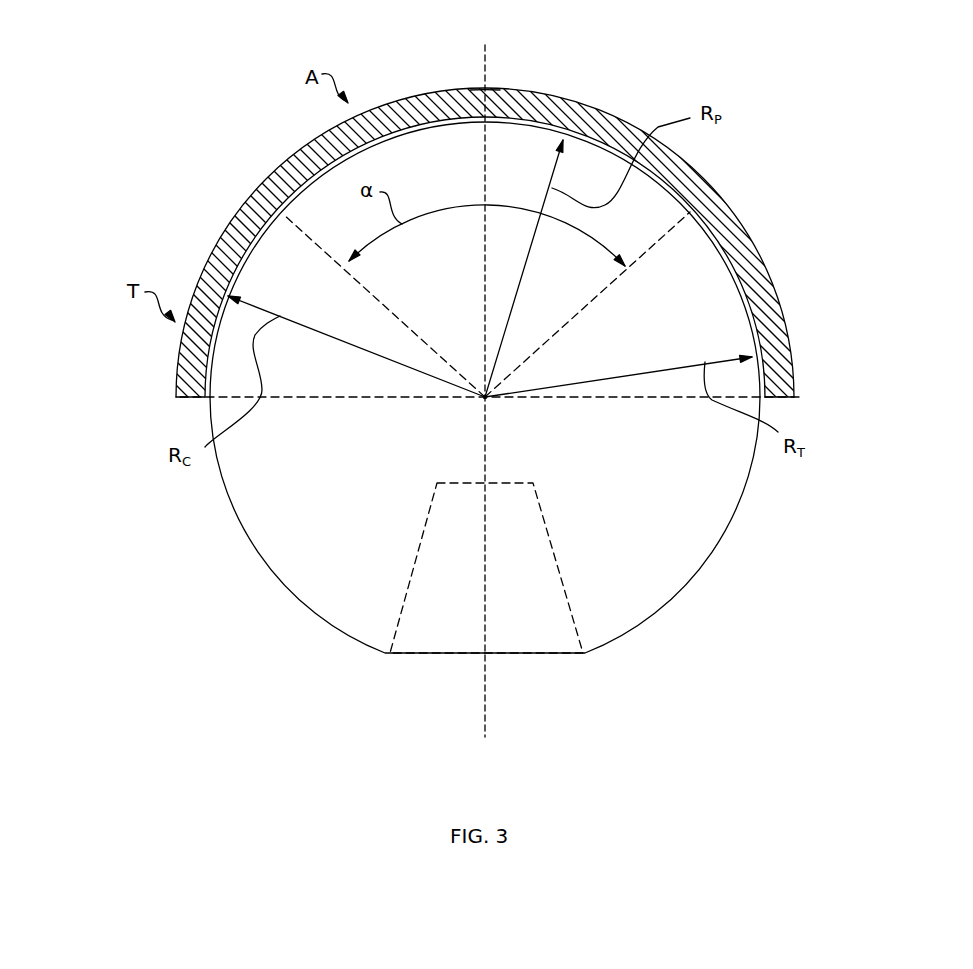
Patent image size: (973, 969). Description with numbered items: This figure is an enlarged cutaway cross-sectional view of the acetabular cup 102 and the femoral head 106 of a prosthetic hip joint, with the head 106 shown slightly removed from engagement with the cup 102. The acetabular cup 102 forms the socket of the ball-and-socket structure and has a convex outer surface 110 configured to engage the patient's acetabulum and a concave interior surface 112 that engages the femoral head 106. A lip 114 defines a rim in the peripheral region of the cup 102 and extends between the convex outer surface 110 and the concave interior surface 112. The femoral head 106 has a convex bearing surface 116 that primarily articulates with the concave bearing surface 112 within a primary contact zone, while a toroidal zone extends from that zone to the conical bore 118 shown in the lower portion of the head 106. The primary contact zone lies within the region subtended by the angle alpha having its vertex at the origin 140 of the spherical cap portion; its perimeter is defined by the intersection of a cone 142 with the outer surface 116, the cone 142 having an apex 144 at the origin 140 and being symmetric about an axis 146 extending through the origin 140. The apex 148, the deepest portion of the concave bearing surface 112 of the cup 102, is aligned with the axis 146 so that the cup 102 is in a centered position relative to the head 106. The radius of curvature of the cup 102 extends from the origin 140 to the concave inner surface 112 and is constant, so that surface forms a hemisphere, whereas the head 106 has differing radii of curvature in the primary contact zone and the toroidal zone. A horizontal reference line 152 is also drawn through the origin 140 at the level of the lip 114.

The acetabular cup 102 is at (268, 180).
The femoral head 106 is at (240, 518).
The convex outer surface 110 is at (800, 280).
The concave interior surface 112 is at (213, 368).
The lip 114 is at (180, 400).
The convex bearing surface 116 is at (308, 188).
The conical bore 118 is at (402, 612).
The origin 140 is at (487, 399).
The cone 142 is at (563, 330).
The apex 144 is at (487, 399).
The axis 146 is at (490, 50).
The apex 148 is at (478, 96).
The horizontal axis 152 is at (820, 397).